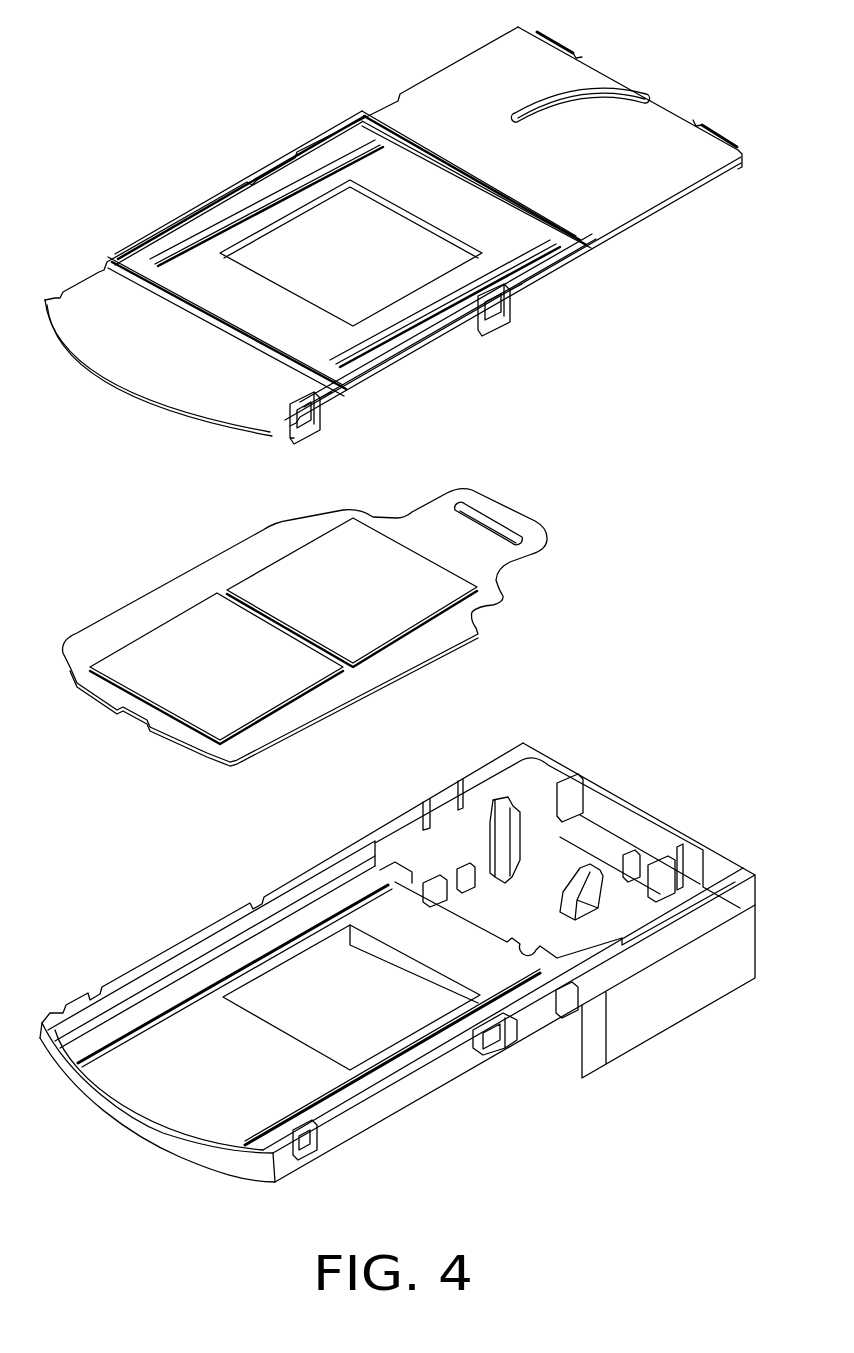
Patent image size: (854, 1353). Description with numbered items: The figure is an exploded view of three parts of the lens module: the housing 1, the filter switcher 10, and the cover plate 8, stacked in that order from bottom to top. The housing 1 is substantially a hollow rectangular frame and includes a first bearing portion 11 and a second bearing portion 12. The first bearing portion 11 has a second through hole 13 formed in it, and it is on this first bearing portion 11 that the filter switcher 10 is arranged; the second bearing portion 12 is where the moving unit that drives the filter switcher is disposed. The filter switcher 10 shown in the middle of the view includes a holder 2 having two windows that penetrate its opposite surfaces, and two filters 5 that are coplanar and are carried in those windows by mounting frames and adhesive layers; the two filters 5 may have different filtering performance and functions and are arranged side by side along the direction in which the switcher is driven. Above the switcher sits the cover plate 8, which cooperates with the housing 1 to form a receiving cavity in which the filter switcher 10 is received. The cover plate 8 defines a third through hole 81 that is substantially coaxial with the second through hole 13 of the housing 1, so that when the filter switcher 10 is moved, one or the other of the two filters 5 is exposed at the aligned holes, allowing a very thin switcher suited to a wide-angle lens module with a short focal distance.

The housing 1 is at (397, 962).
The first bearing portion 11 is at (217, 1027).
The second bearing portion 12 is at (455, 848).
The second through hole 13 is at (328, 962).
The filter switcher 10 is at (327, 608).
The holder 2 is at (443, 513).
The filters 5 is at (227, 625).
The cover plate 8 is at (393, 227).
The third through hole 81 is at (380, 216).